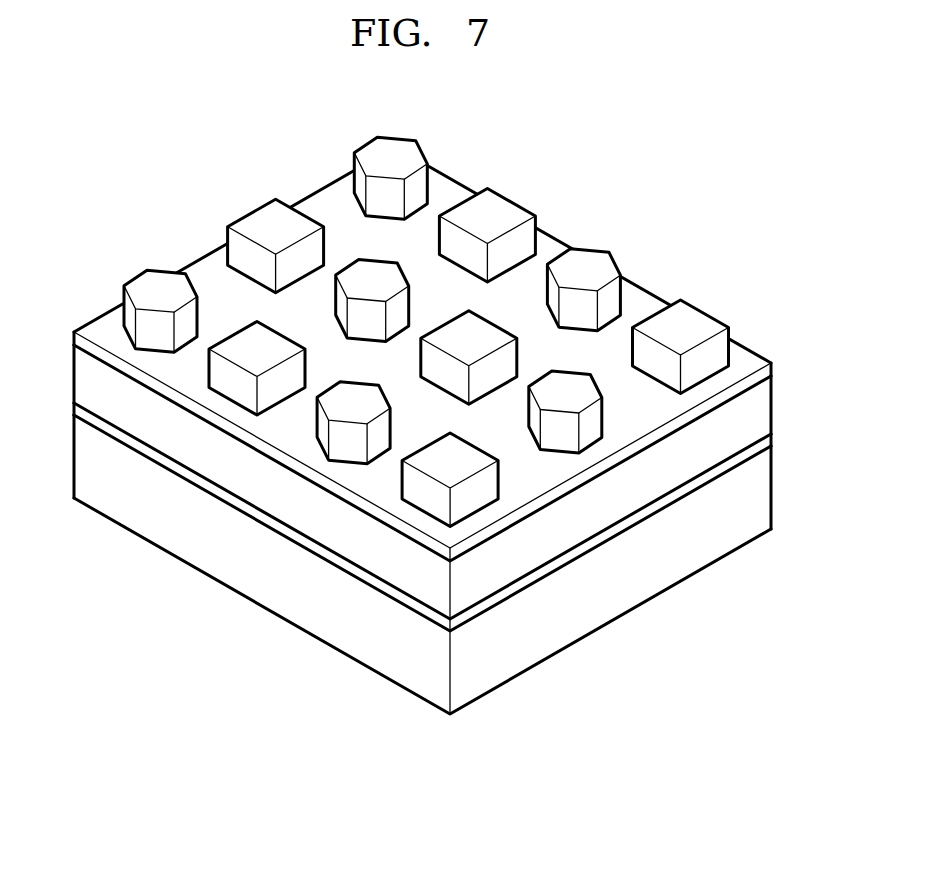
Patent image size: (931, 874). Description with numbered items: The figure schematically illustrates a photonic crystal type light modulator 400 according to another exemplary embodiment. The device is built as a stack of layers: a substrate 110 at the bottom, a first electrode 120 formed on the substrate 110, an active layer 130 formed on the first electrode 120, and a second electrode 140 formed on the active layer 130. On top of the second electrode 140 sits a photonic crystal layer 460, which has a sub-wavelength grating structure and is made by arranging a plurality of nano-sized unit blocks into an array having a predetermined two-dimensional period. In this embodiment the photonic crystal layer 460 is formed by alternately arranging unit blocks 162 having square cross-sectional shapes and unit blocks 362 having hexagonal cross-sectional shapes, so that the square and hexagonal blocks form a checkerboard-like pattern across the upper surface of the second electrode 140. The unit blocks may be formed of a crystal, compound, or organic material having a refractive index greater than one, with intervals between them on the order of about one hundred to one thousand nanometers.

The photonic crystal type light modulator 400 is at (168, 170).
The substrate 110 is at (768, 495).
The first electrode 120 is at (768, 445).
The active layer 130 is at (768, 410).
The second electrode 140 is at (768, 372).
The unit blocks 162 is at (497, 210).
The unit blocks 362 is at (587, 263).
The photonic crystal layer 460 is at (640, 240).